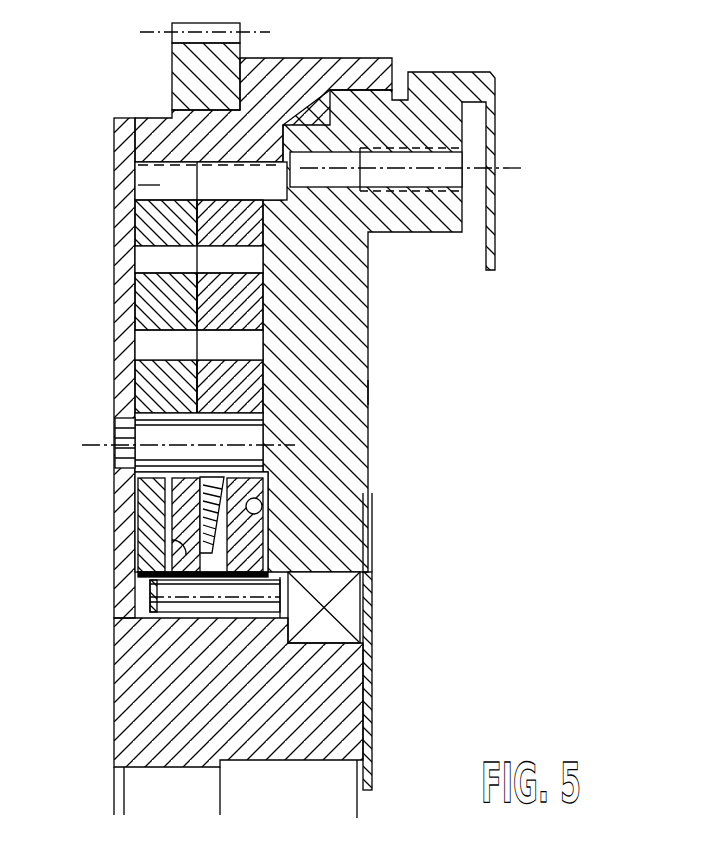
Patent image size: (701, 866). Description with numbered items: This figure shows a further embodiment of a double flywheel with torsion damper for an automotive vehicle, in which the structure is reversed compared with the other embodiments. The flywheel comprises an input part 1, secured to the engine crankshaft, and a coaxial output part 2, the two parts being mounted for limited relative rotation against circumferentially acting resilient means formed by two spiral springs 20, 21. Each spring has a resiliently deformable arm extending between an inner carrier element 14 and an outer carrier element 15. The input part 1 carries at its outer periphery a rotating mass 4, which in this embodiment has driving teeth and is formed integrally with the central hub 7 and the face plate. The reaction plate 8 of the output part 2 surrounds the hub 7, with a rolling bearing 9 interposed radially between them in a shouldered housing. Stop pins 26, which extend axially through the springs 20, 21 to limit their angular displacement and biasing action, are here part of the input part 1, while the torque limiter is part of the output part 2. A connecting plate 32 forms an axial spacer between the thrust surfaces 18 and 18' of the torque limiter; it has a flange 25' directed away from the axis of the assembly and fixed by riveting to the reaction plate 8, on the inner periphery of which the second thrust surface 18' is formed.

The input part 1 is at (100, 237).
The output part 2 is at (383, 331).
The rotating mass 4 is at (172, 137).
The hub 7 is at (160, 687).
The reaction plate 8 is at (370, 392).
The bearing 9 is at (343, 605).
The inner carrier element 14 is at (268, 542).
The outer carrier element 15 is at (117, 192).
The thrust surface 18 is at (161, 601).
The second thrust surface 18' is at (320, 493).
The spiral spring 20 is at (152, 291).
The spiral spring 21 is at (235, 298).
The flange 25' is at (123, 526).
The stop pins 26 is at (117, 410).
The connecting plate 32 is at (148, 509).